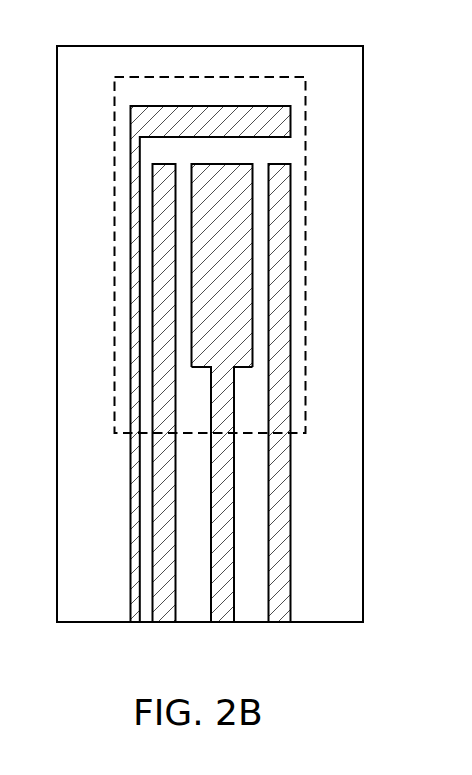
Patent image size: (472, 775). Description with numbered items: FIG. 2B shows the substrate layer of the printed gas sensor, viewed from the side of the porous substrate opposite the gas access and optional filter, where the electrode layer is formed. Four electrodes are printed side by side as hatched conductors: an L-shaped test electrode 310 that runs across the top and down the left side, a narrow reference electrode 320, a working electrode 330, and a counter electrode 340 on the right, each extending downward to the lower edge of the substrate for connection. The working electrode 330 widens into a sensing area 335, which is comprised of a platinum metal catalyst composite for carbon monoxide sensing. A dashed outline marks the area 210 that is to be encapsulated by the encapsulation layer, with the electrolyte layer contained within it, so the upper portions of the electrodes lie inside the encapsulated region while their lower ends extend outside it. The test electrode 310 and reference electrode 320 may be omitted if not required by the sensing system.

The area to be encapsulated 210 is at (269, 255).
The test electrode 310 is at (136, 622).
The reference electrode 320 is at (162, 622).
The working electrode 330 is at (305, 416).
The sensing area 335 is at (243, 257).
The counter electrode 340 is at (278, 622).